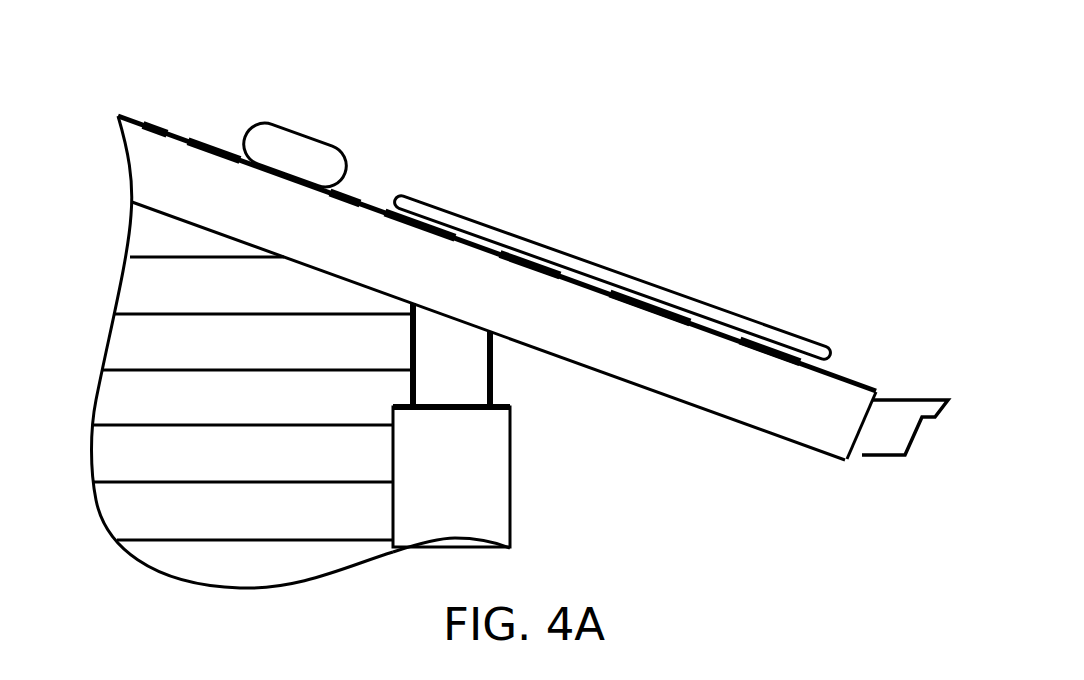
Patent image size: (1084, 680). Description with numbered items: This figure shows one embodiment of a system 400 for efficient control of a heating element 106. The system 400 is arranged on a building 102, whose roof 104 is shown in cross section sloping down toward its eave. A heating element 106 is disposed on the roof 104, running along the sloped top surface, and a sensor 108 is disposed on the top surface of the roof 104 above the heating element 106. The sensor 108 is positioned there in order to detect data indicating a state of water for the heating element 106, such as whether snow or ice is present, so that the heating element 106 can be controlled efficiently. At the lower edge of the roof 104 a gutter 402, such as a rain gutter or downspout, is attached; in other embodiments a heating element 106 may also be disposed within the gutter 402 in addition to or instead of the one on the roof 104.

The system for efficient control of a heating element 400 is at (141, 28).
The building 102 is at (153, 283).
The roof 104 is at (200, 142).
The heating element 106 is at (452, 212).
The sensor 108 is at (327, 143).
The gutter 402 is at (934, 400).